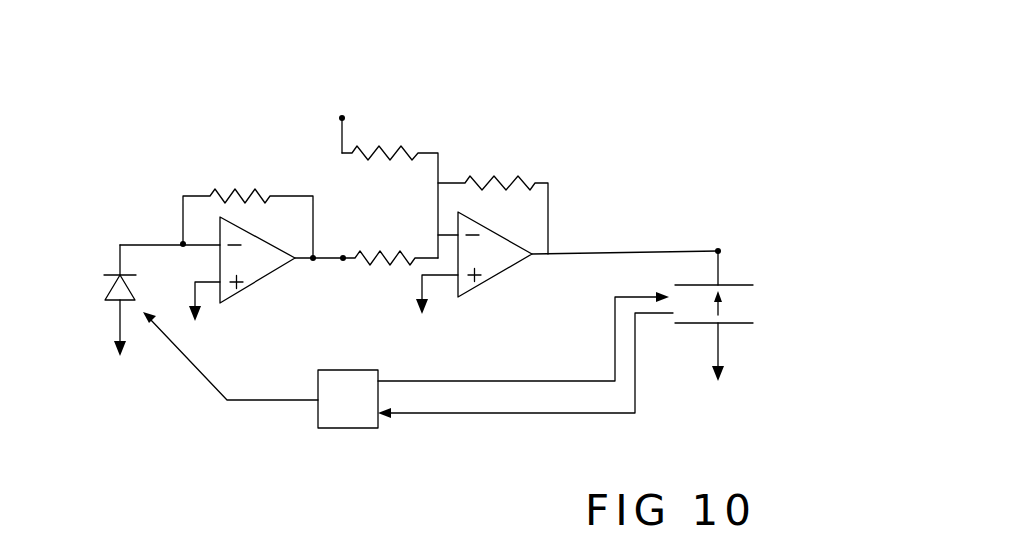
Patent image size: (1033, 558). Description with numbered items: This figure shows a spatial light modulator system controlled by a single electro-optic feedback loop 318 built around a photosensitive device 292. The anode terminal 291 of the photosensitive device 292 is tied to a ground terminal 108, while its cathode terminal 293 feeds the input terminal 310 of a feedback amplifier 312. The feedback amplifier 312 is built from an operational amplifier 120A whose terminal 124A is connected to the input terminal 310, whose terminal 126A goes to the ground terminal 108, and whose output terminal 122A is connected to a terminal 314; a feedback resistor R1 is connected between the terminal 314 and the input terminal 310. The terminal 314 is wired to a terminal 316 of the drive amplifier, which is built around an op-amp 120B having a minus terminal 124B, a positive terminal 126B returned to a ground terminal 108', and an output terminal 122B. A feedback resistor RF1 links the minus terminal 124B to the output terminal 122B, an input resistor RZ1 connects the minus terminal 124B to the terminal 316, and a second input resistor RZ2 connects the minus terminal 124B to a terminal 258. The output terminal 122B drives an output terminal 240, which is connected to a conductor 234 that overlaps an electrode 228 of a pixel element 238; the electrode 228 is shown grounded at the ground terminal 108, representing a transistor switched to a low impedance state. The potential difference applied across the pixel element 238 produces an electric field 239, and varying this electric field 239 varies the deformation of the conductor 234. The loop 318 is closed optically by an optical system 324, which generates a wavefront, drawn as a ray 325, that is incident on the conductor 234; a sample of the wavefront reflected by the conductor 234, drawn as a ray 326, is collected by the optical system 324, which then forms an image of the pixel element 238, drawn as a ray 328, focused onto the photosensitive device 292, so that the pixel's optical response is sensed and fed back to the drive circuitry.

The ground terminal 108 is at (442, 395).
The ground reference 108' is at (407, 332).
The operational amplifier 120A is at (228, 227).
The op-amp 120B is at (468, 220).
The output terminal 122A is at (343, 199).
The output terminal 122B is at (538, 260).
The terminal 124A is at (227, 230).
The minus terminal 124B is at (453, 212).
The terminal 126A is at (232, 303).
The positive terminal 126B is at (447, 320).
The electrode 228 is at (738, 327).
The conductor 234 is at (734, 283).
The pixel element 238 is at (760, 293).
The electric field 239 is at (723, 308).
The output terminal 240 is at (713, 243).
The terminal 258 is at (342, 108).
The anode terminal 291 is at (100, 312).
The photosensitive device 292 is at (115, 231).
The cathode terminal 293 is at (110, 272).
The input terminal 310 is at (192, 256).
The feedback amplifier 312 is at (278, 285).
The terminal 314 is at (321, 250).
The terminal 316 is at (344, 250).
The feedback loop 318 is at (248, 158).
The optical system 324 is at (345, 418).
The ray 325 is at (493, 383).
The ray 326 is at (423, 415).
The ray 328 is at (258, 403).
The feedback resistor R1 is at (247, 182).
The input resistor RZ1 is at (372, 265).
The second input resistor RZ2 is at (383, 140).
The feedback resistor RF1 is at (492, 173).